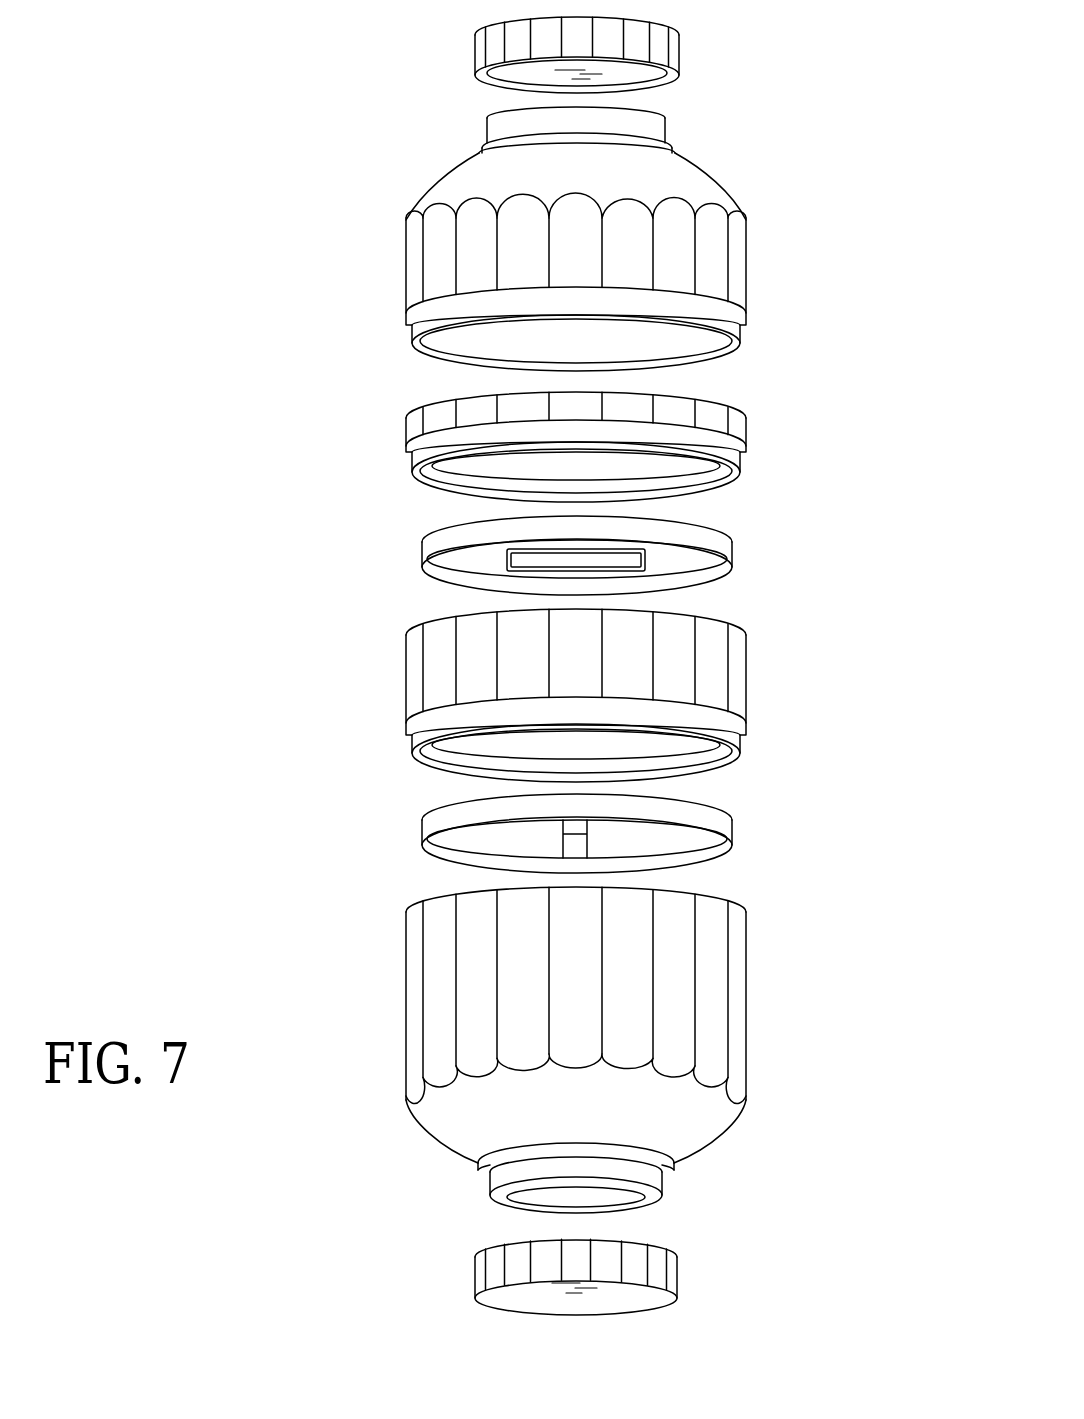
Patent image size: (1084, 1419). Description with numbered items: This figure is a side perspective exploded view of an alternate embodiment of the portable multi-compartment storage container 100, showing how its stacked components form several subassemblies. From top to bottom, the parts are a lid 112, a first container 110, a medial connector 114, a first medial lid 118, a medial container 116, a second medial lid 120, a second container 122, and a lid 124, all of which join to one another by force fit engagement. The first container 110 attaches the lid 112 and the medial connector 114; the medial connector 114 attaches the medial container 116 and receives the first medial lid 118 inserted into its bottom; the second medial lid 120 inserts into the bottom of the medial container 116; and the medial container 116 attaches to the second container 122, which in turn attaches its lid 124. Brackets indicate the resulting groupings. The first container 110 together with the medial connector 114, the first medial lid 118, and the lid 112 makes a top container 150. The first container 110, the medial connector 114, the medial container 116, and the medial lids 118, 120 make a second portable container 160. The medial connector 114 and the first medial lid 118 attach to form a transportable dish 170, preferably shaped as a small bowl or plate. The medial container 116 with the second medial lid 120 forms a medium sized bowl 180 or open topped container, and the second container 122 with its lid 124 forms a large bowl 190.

The portable multi-compartment storage container 100 is at (853, 18).
The first container 110 is at (407, 274).
The lid 112 is at (477, 53).
The medial connector 114 is at (406, 431).
The medial container 116 is at (406, 681).
The first medial lid 118 is at (422, 557).
The second medial lid 120 is at (422, 832).
The second container 122 is at (406, 993).
The lid 124 is at (473, 1268).
The top container 150 is at (345, 18).
The second portable container 160 is at (792, 18).
The transportable dish 170 is at (748, 390).
The medium sized bowl 180 is at (345, 613).
The large bowl 190 is at (340, 892).